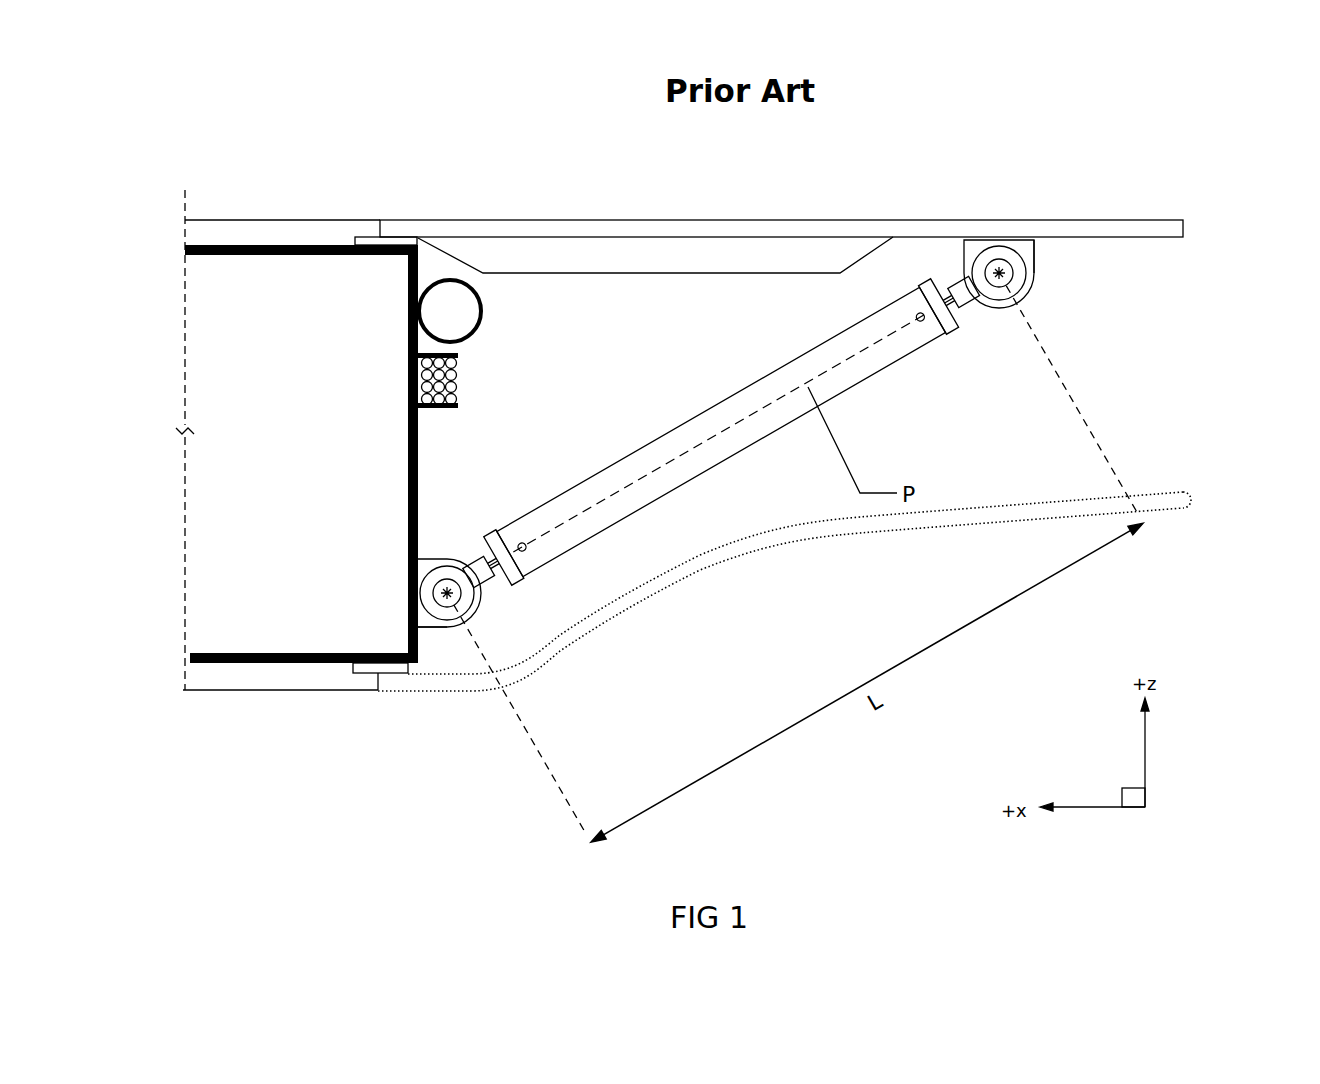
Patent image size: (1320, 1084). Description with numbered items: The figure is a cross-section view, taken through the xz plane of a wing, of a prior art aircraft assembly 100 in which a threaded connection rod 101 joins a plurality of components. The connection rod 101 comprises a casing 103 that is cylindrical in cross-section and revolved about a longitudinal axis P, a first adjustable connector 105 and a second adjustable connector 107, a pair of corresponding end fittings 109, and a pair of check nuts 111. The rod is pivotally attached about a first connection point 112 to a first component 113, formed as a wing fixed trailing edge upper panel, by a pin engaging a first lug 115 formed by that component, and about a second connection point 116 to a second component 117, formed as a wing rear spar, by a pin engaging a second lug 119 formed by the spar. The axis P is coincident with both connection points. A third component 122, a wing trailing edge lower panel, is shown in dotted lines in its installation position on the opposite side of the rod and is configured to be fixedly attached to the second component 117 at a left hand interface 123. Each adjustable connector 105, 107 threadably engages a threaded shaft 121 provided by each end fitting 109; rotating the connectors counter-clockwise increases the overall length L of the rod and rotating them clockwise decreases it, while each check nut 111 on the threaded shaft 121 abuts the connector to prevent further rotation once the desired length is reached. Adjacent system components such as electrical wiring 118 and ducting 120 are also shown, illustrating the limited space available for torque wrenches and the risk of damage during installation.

The aircraft assembly 100 is at (599, 401).
The connection rod 101 is at (721, 431).
The casing 103 is at (721, 433).
The first adjustable connector 105 is at (1094, 334).
The second adjustable connector 107 is at (482, 680).
The end fitting 109 is at (756, 474).
The check nut 111 is at (833, 514).
The first connection point 112 is at (941, 196).
The first component 113 is at (684, 201).
The first lug 115 is at (1154, 300).
The second connection point 116 is at (348, 542).
The second component 117 is at (266, 527).
The electrical wiring 118 is at (552, 293).
The second lug 119 is at (465, 734).
The ducting 120 is at (519, 249).
The threaded shaft 121 is at (588, 341).
The third component 122 is at (831, 591).
The left hand interface 123 is at (295, 759).